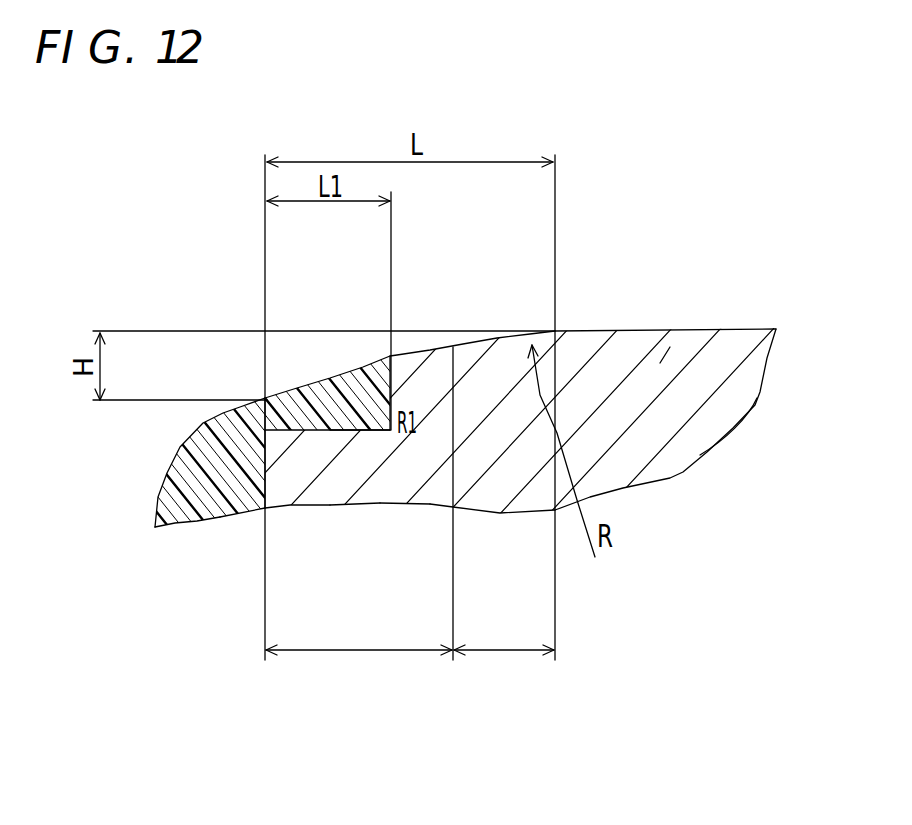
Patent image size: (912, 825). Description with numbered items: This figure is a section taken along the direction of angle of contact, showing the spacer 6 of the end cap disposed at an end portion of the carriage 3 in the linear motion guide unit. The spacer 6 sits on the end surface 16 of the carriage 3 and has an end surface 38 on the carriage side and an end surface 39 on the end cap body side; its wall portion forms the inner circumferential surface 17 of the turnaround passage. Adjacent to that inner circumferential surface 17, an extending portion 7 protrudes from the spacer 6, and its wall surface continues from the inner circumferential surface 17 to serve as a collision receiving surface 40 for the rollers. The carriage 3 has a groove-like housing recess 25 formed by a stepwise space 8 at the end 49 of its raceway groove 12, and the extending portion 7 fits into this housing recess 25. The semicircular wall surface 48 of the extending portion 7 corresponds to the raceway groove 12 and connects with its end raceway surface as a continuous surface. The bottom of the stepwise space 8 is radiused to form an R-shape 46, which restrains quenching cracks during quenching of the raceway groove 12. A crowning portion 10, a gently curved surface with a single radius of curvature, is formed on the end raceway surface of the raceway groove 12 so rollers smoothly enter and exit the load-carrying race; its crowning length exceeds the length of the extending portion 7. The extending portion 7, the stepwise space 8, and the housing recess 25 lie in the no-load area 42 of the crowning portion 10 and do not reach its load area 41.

The carriage 3 is at (683, 330).
The spacer 6 is at (168, 520).
The extending portion 7 is at (317, 432).
The stepwise space 8 is at (393, 457).
The crowning portion 10 is at (420, 352).
The raceway groove 12 is at (590, 330).
The end surface 16 is at (250, 506).
The inner circumferential surface 17 is at (182, 450).
The housing recess 25 is at (347, 432).
The end surface 38 is at (266, 463).
The end surface 39 is at (158, 505).
The collision receiving surface 40 is at (355, 367).
The load area 41 is at (503, 517).
The no-load area 42 is at (359, 670).
The R-shape 46 is at (388, 428).
The semicircular wall surface 48 is at (312, 385).
The end 49 is at (300, 480).